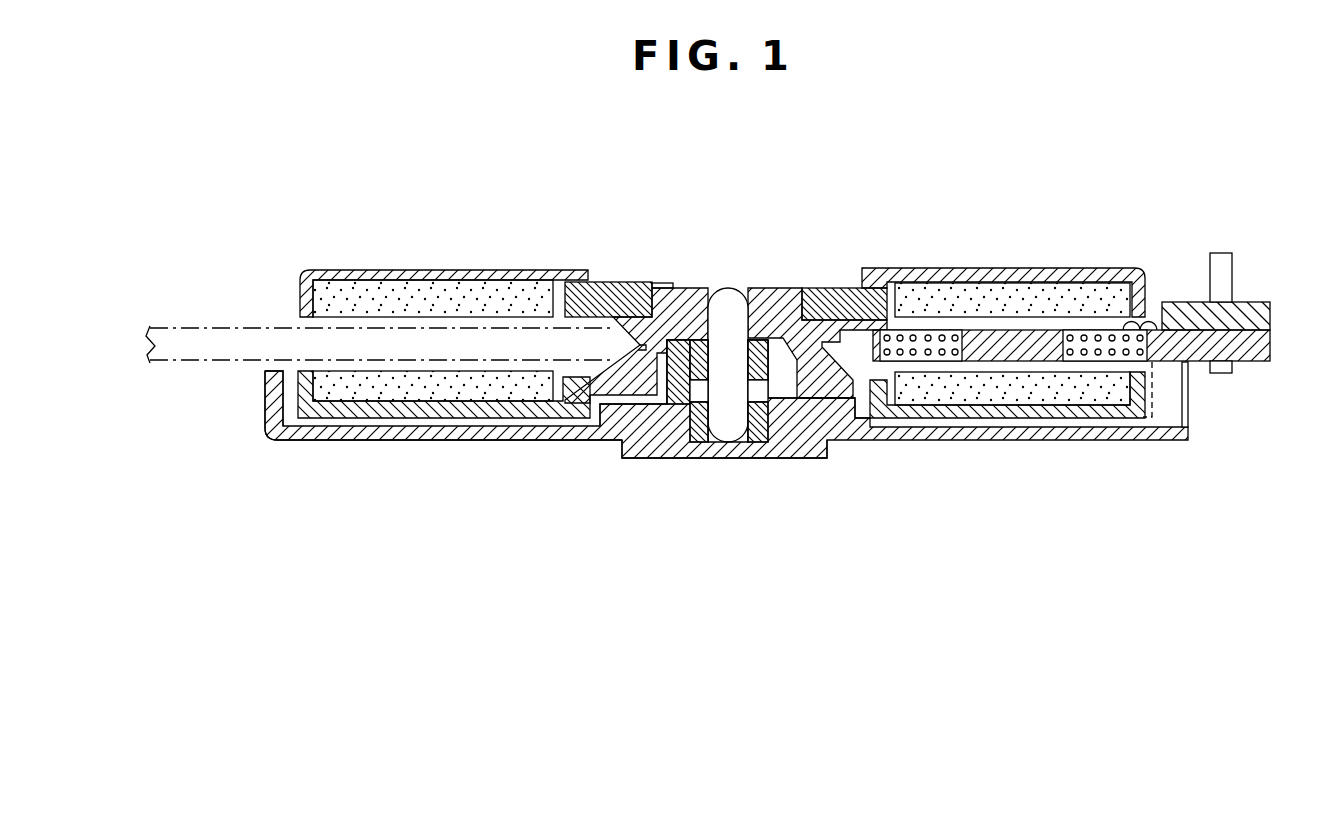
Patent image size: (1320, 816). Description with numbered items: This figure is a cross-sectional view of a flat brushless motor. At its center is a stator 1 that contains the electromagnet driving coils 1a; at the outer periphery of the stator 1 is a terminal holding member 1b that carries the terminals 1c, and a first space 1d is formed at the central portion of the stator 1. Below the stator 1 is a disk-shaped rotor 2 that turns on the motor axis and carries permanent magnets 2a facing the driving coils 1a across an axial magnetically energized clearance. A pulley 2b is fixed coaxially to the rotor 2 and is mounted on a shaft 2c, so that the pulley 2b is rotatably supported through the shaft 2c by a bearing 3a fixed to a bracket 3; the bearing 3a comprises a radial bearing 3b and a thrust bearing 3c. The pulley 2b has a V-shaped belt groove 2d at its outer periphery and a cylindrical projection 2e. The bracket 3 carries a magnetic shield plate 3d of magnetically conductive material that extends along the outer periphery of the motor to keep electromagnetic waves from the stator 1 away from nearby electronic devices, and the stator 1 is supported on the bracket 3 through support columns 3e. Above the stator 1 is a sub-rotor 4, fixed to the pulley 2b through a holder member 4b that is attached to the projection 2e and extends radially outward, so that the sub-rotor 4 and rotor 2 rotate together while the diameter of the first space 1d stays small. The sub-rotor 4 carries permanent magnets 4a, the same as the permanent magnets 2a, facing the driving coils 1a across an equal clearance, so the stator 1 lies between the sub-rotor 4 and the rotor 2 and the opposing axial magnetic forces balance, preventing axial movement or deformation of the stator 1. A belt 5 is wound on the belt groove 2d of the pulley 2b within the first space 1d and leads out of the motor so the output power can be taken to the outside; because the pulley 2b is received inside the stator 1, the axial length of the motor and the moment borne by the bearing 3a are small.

The stator 1 is at (1020, 353).
The driving coils 1a is at (935, 335).
The terminal holding member 1b is at (1270, 318).
The terminals 1c is at (1232, 262).
The first space 1d is at (847, 340).
The rotor 2 is at (355, 416).
The permanent magnets 2a is at (428, 402).
The pulley 2b is at (632, 325).
The shaft 2c is at (728, 300).
The belt groove 2d is at (640, 345).
The cylindrical projection 2e is at (672, 288).
The bracket 3 is at (1130, 442).
The bearing 3a is at (640, 460).
The radial bearing 3b is at (698, 436).
The thrust bearing 3c is at (770, 460).
The magnetic shield plate 3d is at (265, 406).
The support columns 3e is at (1188, 402).
The sub-rotor 4 is at (378, 270).
The permanent magnets 4a is at (472, 286).
The holder member 4b is at (600, 284).
The belt 5 is at (208, 334).